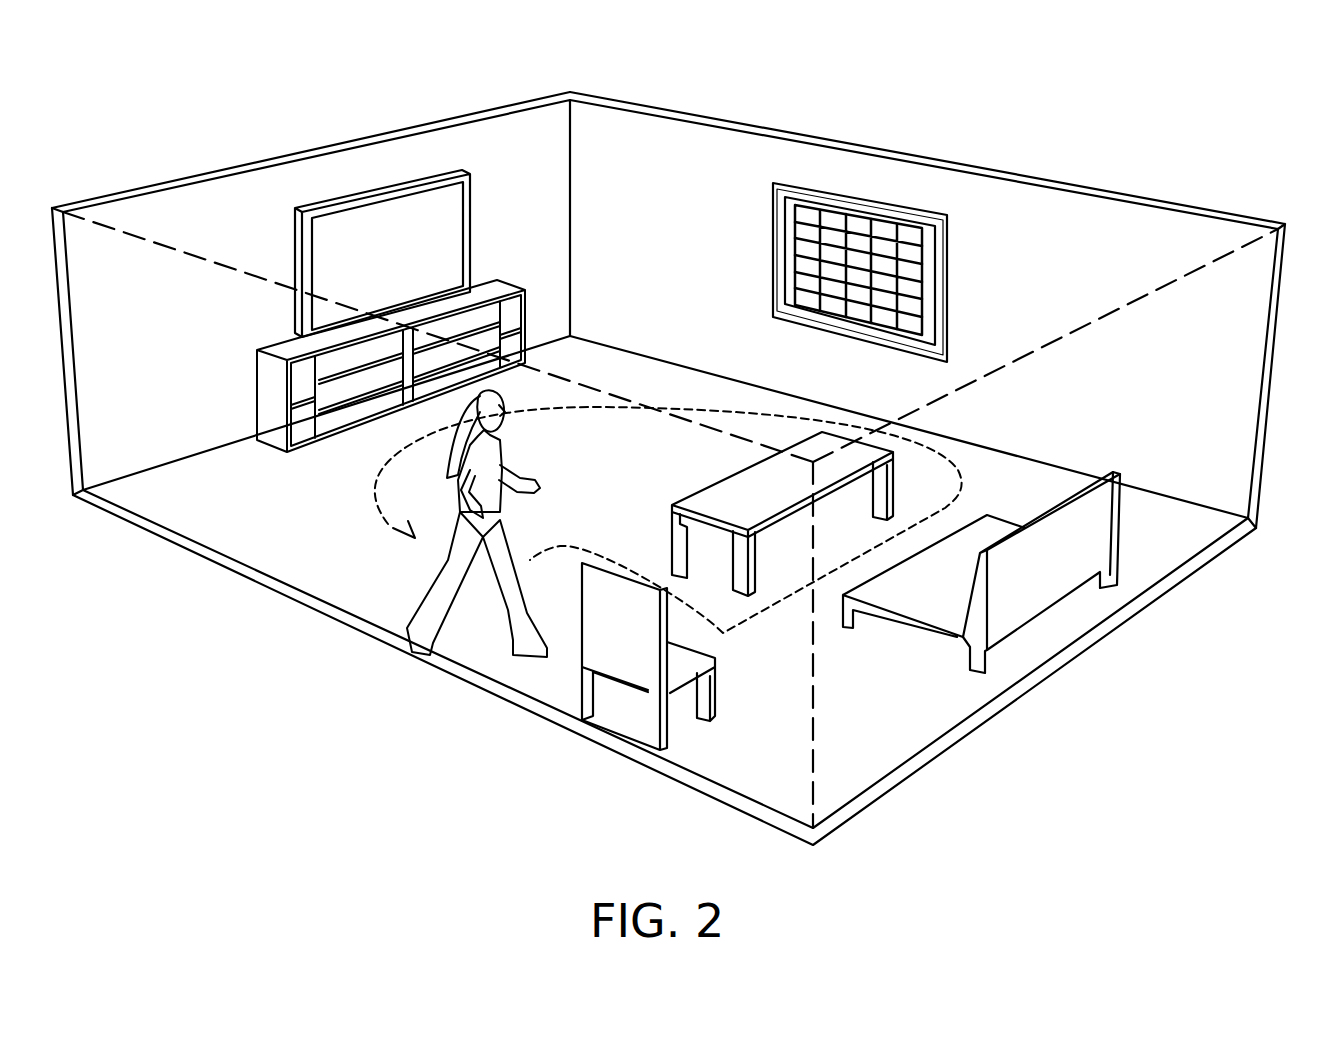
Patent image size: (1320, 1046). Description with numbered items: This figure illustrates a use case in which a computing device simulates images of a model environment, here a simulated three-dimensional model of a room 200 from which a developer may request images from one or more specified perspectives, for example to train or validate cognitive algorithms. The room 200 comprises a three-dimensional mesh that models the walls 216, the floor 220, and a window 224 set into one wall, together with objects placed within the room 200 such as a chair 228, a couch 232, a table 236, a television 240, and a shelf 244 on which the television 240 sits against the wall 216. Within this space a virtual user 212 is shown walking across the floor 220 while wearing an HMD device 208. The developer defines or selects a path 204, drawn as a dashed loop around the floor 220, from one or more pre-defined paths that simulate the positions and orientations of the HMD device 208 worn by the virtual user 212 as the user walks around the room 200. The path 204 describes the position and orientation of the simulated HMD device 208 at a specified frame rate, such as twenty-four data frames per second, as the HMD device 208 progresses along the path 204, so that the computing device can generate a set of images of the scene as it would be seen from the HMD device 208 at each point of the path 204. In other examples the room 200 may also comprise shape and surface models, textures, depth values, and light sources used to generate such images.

The room 200 is at (668, 452).
The path 204 is at (570, 548).
The HMD device 208 is at (503, 412).
The virtual user 212 is at (467, 519).
The walls 216 is at (200, 200).
The floor 220 is at (237, 545).
The window 224 is at (946, 256).
The chair 228 is at (715, 690).
The couch 232 is at (1117, 531).
The table 236 is at (725, 477).
The television 240 is at (473, 202).
The shelf 244 is at (280, 342).